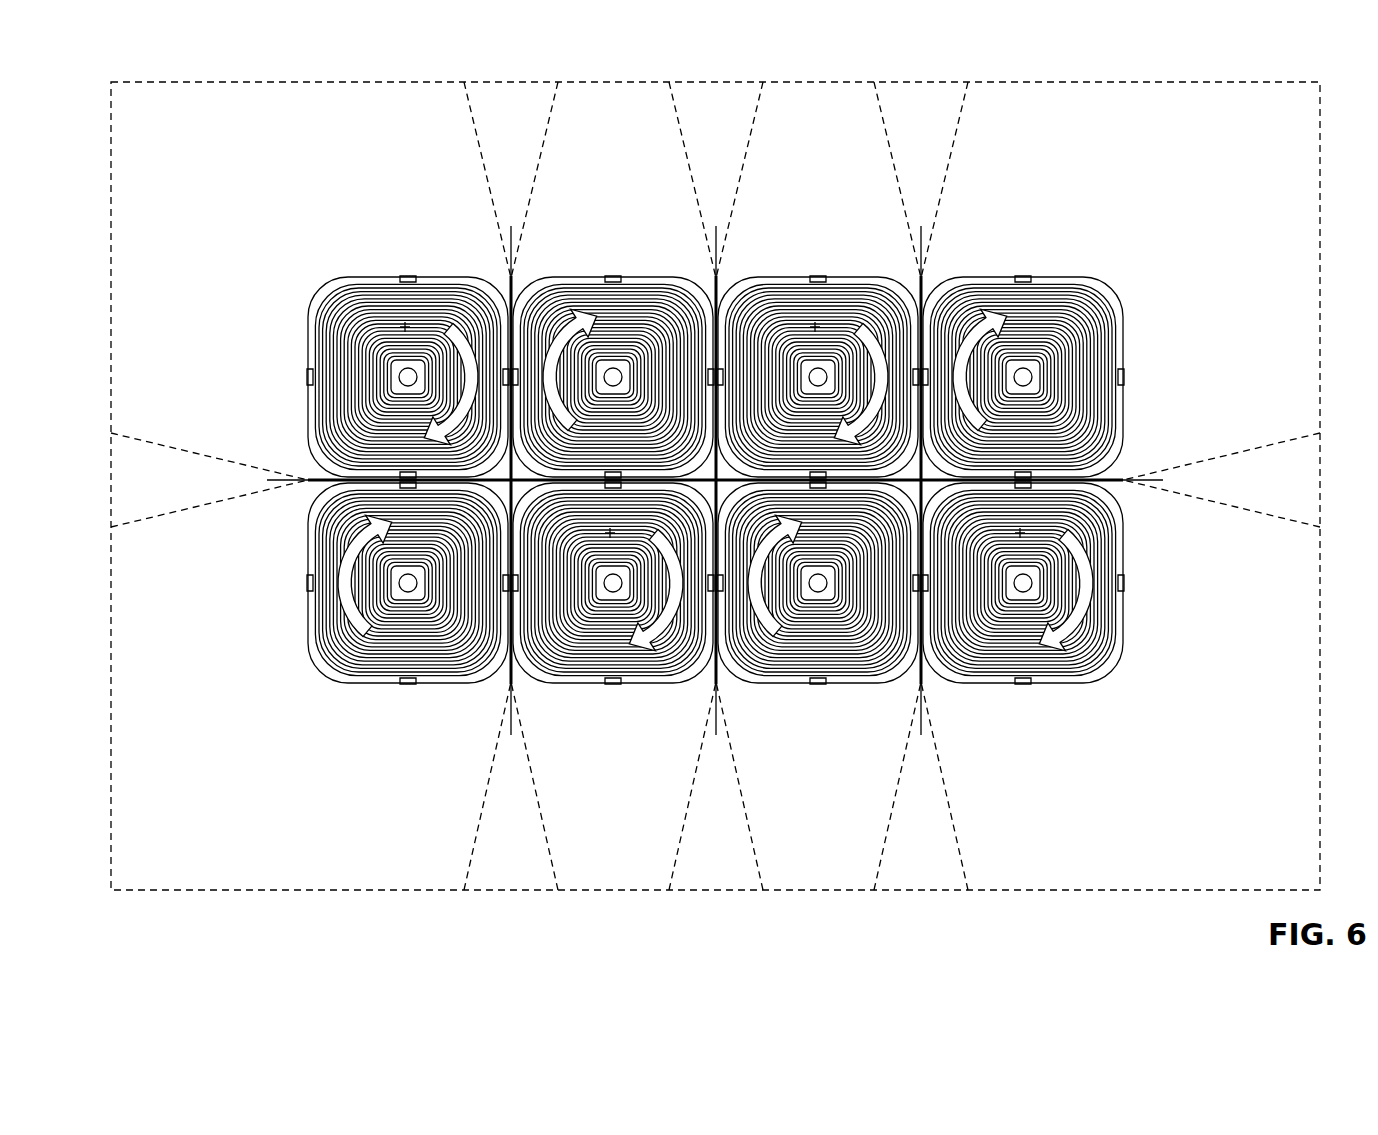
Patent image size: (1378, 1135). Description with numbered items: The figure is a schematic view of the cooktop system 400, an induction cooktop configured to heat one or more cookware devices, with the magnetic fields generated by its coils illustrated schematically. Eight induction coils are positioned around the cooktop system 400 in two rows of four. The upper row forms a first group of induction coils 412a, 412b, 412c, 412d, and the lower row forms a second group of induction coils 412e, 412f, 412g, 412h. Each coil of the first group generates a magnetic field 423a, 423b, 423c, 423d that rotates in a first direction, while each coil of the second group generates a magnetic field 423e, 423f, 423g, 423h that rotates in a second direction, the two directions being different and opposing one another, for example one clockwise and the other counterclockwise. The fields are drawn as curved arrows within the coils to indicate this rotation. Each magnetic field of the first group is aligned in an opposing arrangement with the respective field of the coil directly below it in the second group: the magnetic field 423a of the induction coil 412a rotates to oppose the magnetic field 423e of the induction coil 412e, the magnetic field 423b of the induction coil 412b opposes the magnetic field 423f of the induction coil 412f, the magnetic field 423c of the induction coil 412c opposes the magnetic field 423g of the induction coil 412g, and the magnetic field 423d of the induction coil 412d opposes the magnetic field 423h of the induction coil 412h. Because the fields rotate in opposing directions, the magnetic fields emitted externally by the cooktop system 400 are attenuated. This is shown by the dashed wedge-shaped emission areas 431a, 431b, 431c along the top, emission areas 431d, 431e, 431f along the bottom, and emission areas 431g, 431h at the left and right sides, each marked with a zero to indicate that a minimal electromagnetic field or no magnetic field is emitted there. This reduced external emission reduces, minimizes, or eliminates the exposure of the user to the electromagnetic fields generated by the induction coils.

The cooktop system 400 is at (181, 69).
The induction coil 412a is at (408, 292).
The induction coil 412b is at (613, 292).
The induction coil 412c is at (818, 292).
The induction coil 412d is at (1023, 292).
The induction coil 412e is at (408, 667).
The induction coil 412f is at (613, 667).
The induction coil 412g is at (818, 667).
The induction coil 412h is at (1023, 667).
The magnetic field 423a is at (430, 437).
The magnetic field 423b is at (590, 335).
The magnetic field 423c is at (838, 438).
The magnetic field 423d is at (1005, 335).
The magnetic field 423e is at (398, 527).
The magnetic field 423f is at (633, 630).
The magnetic field 423g is at (808, 525).
The magnetic field 423h is at (1044, 632).
The emission area 431a is at (472, 120).
The emission area 431b is at (678, 122).
The emission area 431c is at (881, 116).
The emission area 431d is at (474, 836).
The emission area 431e is at (682, 829).
The emission area 431f is at (886, 832).
The emission area 431g is at (200, 507).
The emission area 431h is at (1237, 507).